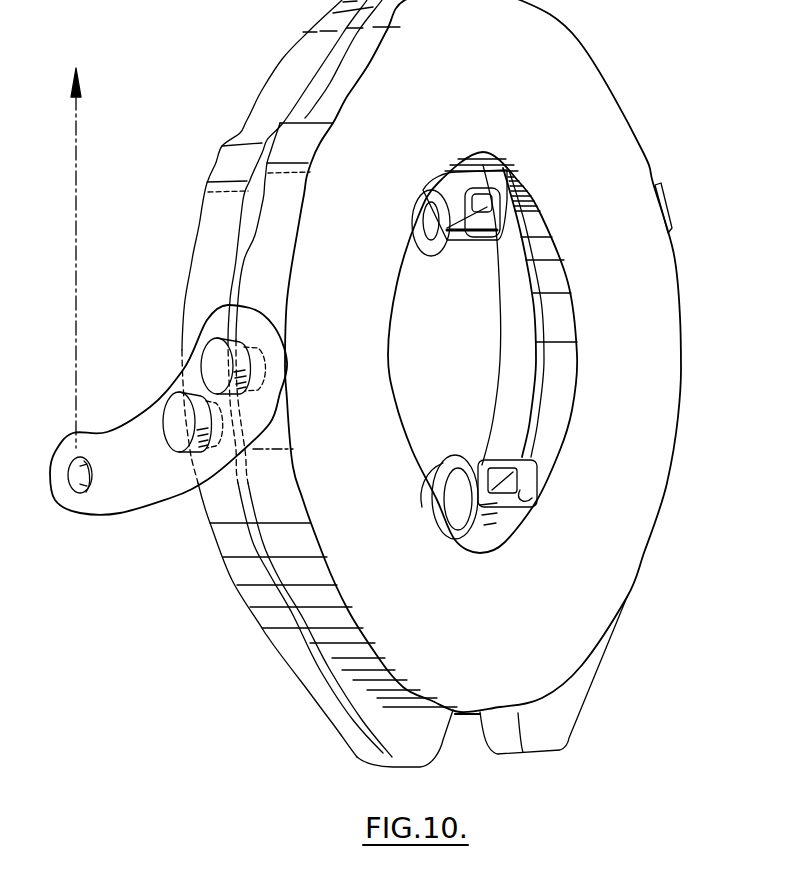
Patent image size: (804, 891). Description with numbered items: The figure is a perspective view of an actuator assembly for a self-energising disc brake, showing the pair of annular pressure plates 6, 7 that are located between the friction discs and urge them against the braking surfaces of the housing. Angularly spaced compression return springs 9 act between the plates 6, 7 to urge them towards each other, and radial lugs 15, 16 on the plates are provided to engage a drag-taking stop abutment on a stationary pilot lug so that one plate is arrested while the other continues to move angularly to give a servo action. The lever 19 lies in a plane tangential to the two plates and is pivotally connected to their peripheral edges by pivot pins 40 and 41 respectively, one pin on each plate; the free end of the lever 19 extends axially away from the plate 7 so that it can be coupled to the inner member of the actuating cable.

The annular pressure plate 6 is at (620, 512).
The annular pressure plate 7 is at (253, 593).
The compression return spring 9 is at (453, 245).
The radial lug 15 is at (560, 722).
The radial lug 16 is at (400, 740).
The lever 19 is at (130, 443).
The pivot pin 40 is at (218, 358).
The pivot pin 41 is at (185, 437).